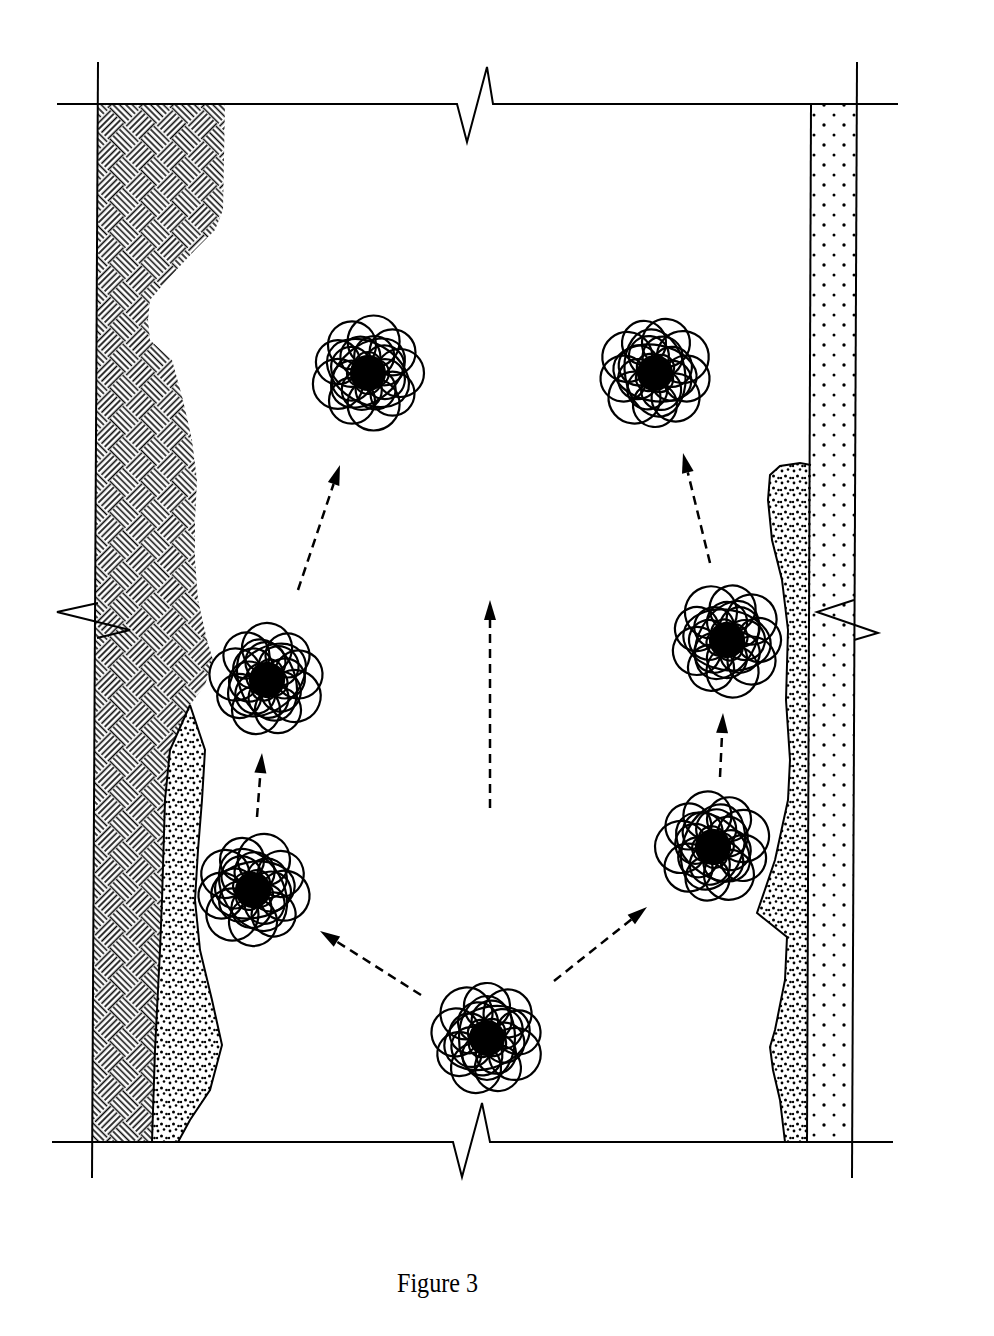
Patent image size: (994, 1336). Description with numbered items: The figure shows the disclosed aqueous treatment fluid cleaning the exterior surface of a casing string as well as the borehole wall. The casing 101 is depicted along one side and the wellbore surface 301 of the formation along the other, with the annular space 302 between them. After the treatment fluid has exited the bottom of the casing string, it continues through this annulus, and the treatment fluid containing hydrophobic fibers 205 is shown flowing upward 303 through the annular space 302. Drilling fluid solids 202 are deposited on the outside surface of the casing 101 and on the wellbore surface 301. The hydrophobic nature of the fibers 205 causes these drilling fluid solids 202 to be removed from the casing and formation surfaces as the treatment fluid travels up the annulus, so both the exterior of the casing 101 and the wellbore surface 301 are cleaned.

The casing 101 is at (810, 177).
The drilling fluid solids 202 is at (222, 1047).
The hydrophobic fibers 205 is at (543, 1033).
The wellbore surface 301 is at (222, 213).
The annular space 302 is at (577, 167).
The upward flow 303 is at (490, 709).